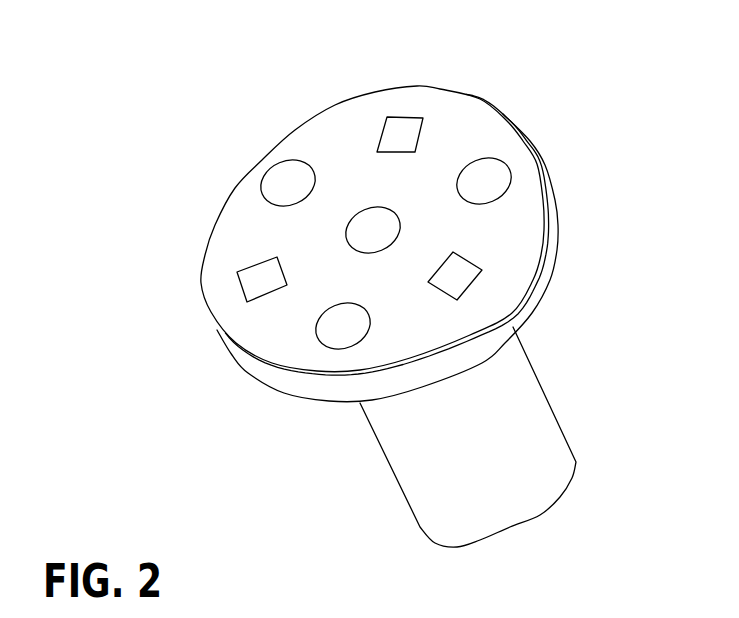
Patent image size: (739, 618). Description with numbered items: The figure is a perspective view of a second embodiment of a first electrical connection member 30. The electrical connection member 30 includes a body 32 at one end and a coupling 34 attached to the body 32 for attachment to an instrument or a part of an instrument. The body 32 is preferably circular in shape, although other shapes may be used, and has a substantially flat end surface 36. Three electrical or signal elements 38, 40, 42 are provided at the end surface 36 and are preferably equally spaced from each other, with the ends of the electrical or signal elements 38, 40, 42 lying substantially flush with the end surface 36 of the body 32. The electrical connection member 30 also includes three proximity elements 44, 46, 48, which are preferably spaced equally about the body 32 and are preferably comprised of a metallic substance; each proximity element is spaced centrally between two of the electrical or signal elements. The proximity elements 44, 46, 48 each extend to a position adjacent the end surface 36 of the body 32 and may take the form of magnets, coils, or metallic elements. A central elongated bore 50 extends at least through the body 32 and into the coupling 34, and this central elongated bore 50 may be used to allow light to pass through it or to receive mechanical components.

The first electrical connection member 30 is at (246, 125).
The body 32 is at (512, 224).
The coupling 34 is at (535, 413).
The end surface 36 is at (333, 148).
The electrical or signal element 38 is at (490, 178).
The electrical or signal element 40 is at (335, 332).
The electrical or signal element 42 is at (277, 187).
The proximity element 44 is at (414, 127).
The proximity element 46 is at (462, 276).
The proximity element 48 is at (245, 299).
The central elongated bore 50 is at (357, 236).